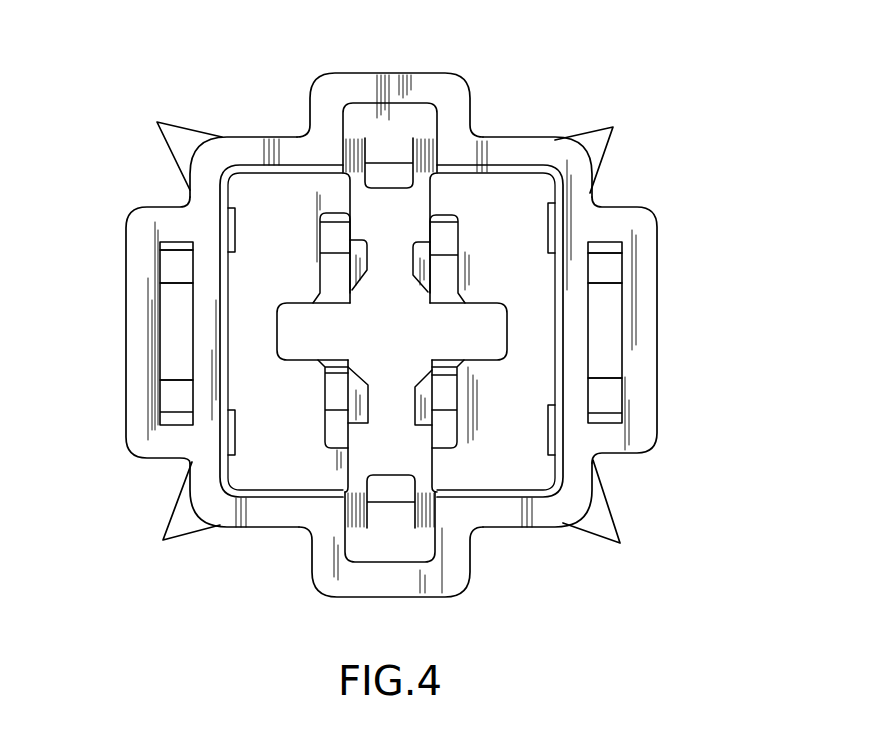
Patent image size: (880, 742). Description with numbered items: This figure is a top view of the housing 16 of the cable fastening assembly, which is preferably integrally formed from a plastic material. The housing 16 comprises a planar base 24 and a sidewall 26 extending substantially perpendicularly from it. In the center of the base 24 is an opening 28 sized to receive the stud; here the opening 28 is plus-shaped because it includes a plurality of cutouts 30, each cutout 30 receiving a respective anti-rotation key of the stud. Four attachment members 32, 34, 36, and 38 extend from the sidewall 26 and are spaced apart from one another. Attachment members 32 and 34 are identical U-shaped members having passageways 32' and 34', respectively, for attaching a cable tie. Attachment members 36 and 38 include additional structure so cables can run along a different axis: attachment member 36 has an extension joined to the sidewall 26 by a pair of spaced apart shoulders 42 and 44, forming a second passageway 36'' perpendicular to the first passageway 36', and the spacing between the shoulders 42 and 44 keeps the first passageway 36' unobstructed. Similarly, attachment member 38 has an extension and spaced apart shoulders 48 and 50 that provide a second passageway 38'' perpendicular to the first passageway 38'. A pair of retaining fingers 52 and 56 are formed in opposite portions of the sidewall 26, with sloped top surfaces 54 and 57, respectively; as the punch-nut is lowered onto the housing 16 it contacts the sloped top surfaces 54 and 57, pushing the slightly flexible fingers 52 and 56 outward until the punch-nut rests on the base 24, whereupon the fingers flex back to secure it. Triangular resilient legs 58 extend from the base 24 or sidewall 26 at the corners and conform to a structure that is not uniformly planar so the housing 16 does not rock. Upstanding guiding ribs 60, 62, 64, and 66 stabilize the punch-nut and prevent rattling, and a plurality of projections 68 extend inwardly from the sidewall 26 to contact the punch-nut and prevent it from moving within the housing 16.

The housing 16 is at (682, 158).
The base 24 is at (500, 190).
The sidewall 26 is at (263, 137).
The opening 28 is at (380, 344).
The cutout 30 is at (372, 233).
The attachment member 32 is at (390, 81).
The passageway 32' is at (390, 95).
The attachment member 34 is at (395, 580).
The passageway 34' is at (390, 567).
The attachment member 36 is at (646, 330).
The first passageway 36' is at (647, 315).
The second passageway 36'' is at (629, 203).
The attachment member 38 is at (135, 330).
The first passageway 38' is at (137, 347).
The second passageway 38'' is at (147, 200).
The shoulder 42 is at (610, 400).
The shoulder 44 is at (610, 270).
The shoulder 48 is at (175, 408).
The shoulder 50 is at (170, 270).
The retaining finger 52 is at (377, 520).
The sloped top surface 54 is at (403, 487).
The retaining finger 56 is at (395, 150).
The sloped top surface 57 is at (380, 175).
The resilient legs 58 is at (177, 140).
The guiding rib 60 is at (452, 241).
The guiding rib 62 is at (333, 233).
The guiding rib 64 is at (452, 398).
The guiding rib 66 is at (330, 393).
The projections 68 is at (233, 228).